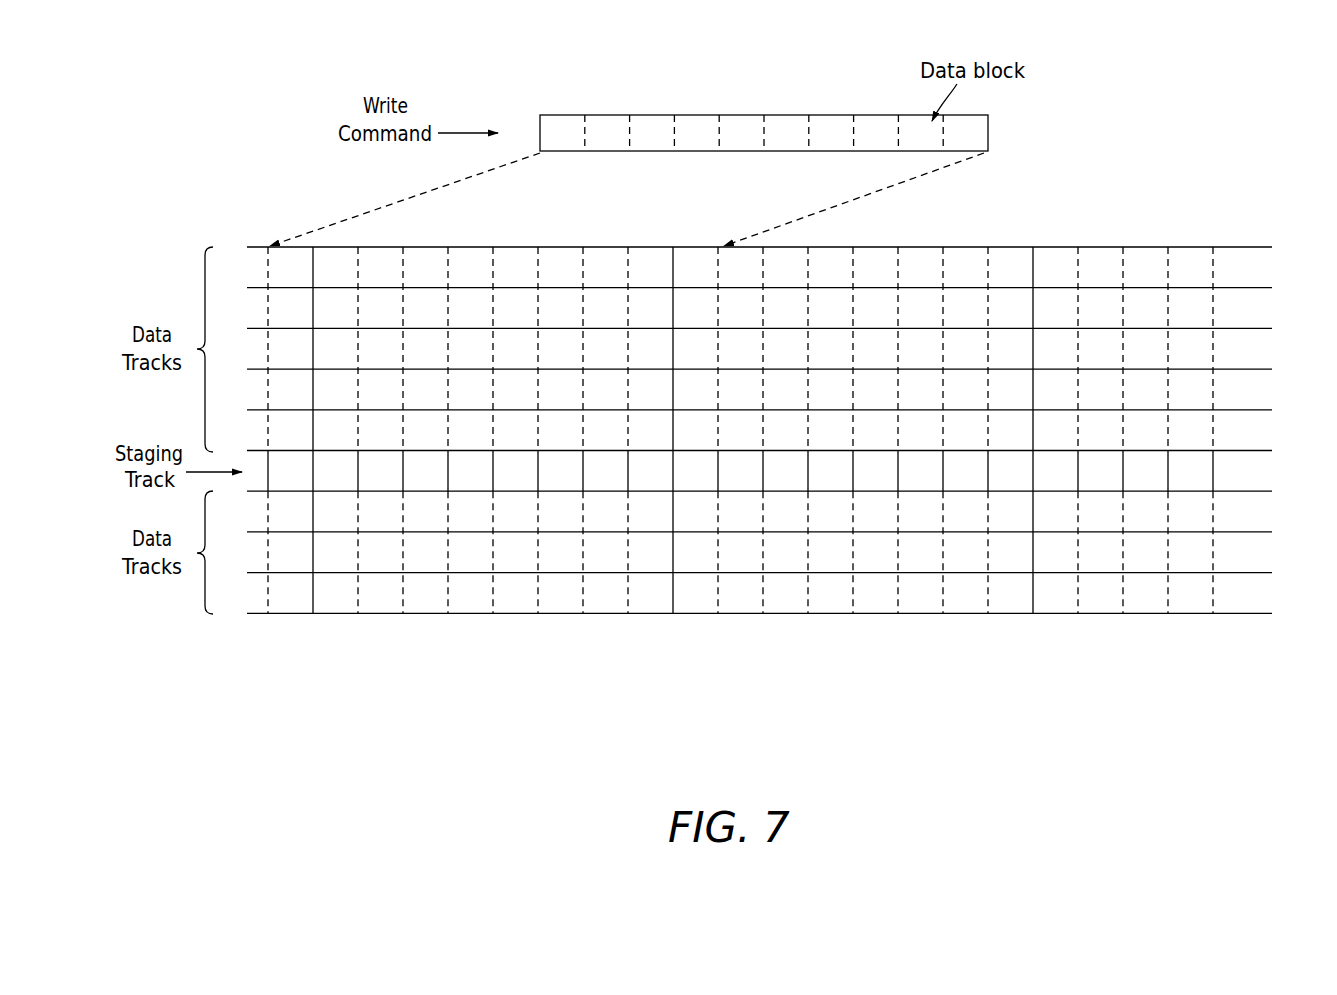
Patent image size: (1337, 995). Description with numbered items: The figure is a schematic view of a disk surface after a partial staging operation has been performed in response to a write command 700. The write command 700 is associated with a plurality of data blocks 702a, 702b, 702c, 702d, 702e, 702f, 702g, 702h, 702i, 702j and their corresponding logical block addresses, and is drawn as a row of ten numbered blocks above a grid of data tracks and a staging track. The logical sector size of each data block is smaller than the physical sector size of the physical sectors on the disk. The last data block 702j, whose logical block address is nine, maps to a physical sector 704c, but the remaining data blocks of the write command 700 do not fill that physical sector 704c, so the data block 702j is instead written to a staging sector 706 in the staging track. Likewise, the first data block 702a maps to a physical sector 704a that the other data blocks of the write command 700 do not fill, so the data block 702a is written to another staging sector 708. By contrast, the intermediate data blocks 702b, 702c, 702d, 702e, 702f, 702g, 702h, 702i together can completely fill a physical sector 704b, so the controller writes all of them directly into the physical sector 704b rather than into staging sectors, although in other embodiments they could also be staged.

The write command 700 is at (692, 41).
The data block 702a is at (550, 152).
The data block 702b is at (605, 152).
The data block 702c is at (657, 152).
The data block 702d is at (708, 152).
The data block 702e is at (730, 115).
The data block 702f is at (785, 115).
The data block 702g is at (840, 115).
The data block 702h is at (878, 152).
The data block 702i is at (920, 152).
The data block 702j is at (988, 127).
The physical sector 704a is at (257, 244).
The physical sector 704b is at (426, 243).
The physical sector 704c is at (866, 243).
The staging sector 706 is at (337, 497).
The staging sector 708 is at (290, 497).